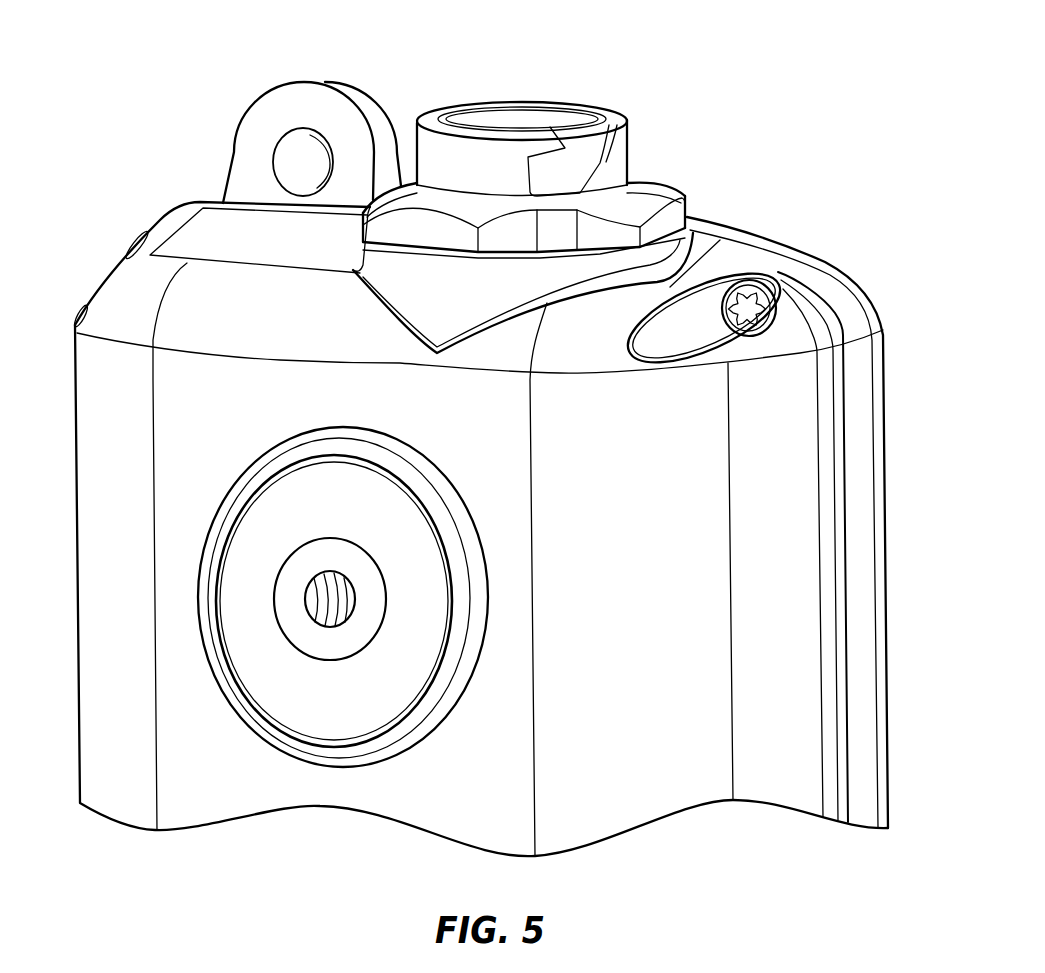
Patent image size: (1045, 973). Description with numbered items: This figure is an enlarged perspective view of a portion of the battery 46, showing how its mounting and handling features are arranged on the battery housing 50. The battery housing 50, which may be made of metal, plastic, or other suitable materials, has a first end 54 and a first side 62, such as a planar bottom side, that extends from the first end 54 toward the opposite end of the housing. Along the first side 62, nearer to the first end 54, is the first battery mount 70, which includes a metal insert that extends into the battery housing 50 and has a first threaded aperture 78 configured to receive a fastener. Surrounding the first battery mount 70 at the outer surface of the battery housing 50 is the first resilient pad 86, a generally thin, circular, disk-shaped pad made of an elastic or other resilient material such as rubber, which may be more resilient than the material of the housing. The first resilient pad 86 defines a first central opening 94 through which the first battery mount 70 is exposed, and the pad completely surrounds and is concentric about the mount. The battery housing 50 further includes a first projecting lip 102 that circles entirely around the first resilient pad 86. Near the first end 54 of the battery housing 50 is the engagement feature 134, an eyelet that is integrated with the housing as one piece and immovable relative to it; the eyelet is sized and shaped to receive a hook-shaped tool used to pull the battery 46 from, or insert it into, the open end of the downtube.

The battery 46 is at (738, 209).
The battery housing 50 is at (790, 333).
The first end 54 is at (767, 262).
The first side 62 is at (647, 760).
The first battery mount 70 is at (300, 587).
The first threaded aperture 78 is at (327, 600).
The first resilient pad 86 is at (275, 507).
The first central opening 94 is at (312, 637).
The first projecting lip 102 is at (267, 463).
The engagement feature 134 is at (260, 132).